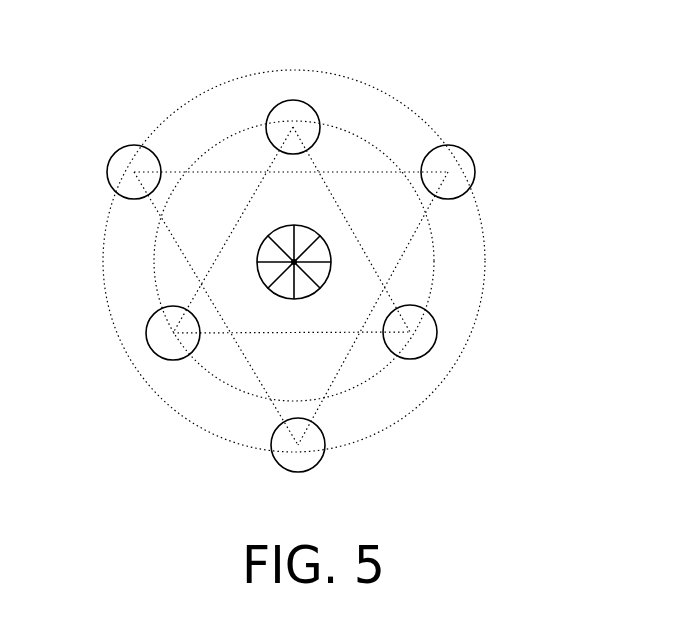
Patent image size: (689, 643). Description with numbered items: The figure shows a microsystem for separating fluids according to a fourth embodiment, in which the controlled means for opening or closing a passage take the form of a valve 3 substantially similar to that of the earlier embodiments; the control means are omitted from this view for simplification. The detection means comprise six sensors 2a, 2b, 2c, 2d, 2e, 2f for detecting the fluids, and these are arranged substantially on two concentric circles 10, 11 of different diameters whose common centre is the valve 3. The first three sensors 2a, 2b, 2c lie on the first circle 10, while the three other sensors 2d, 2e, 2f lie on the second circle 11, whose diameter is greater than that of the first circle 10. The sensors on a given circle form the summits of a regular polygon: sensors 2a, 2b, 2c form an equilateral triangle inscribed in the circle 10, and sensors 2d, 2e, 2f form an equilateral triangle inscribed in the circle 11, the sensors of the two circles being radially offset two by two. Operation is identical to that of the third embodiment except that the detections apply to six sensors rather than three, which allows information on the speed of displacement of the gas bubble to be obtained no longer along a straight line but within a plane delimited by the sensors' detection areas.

The sensor 2a is at (302, 118).
The sensor 2b is at (427, 342).
The sensor 2c is at (158, 343).
The sensor 2d is at (120, 146).
The sensor 2e is at (458, 178).
The sensor 2f is at (305, 460).
The valve 3 is at (318, 253).
The first circle 10 is at (152, 270).
The second circle 11 is at (190, 101).